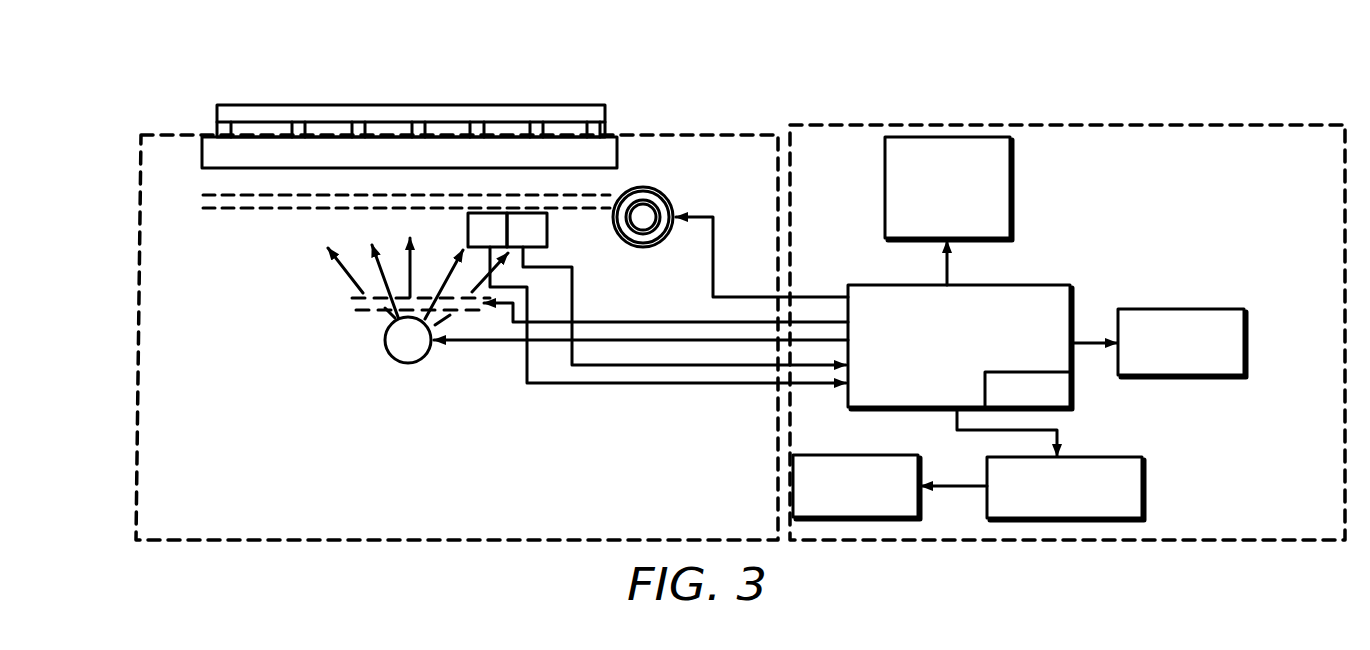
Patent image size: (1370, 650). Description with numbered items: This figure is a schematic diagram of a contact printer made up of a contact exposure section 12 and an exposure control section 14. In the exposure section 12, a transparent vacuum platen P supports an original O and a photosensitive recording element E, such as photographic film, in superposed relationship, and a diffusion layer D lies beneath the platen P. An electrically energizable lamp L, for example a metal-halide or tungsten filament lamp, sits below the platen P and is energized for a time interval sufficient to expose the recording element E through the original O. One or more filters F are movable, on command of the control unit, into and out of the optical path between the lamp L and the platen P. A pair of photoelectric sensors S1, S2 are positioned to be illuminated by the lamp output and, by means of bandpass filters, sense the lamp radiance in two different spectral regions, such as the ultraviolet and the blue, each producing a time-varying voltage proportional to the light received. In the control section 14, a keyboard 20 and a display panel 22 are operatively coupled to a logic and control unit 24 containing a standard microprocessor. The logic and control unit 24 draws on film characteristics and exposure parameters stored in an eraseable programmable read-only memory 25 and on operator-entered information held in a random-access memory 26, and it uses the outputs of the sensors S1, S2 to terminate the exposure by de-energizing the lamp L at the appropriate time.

The contact exposure section 12 is at (714, 134).
The exposure control section 14 is at (1049, 124).
The keyboard 20 is at (1093, 456).
The display panel 22 is at (850, 455).
The logic and control unit 24 is at (1042, 285).
The eraseable programmable read-only memory 25 is at (1015, 188).
The random-access memory 26 is at (1160, 309).
The recording element E is at (607, 118).
The original O is at (607, 128).
The transparent vacuum platen P is at (618, 151).
The diaphragm / aperture layer D is at (203, 202).
The filters F is at (352, 303).
The lamp L is at (588, 300).
The photoelectric sensor S1 is at (657, 298).
The photoelectric sensor S2 is at (676, 289).